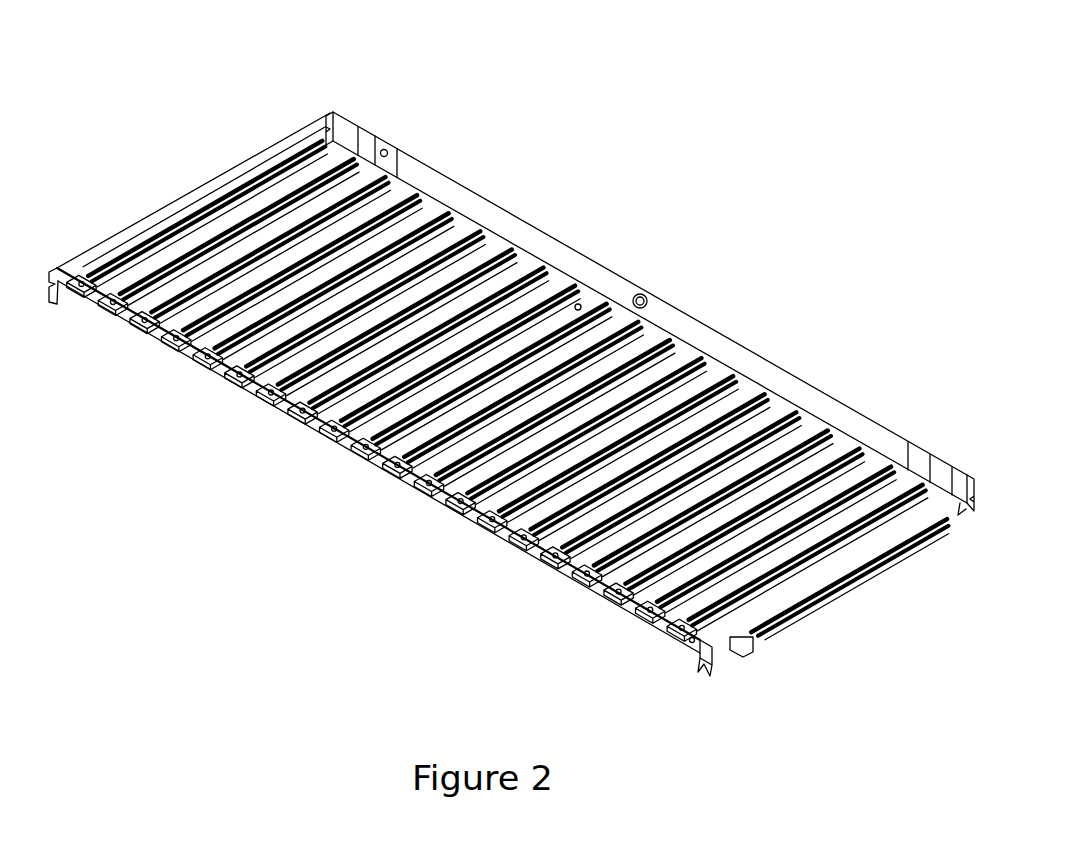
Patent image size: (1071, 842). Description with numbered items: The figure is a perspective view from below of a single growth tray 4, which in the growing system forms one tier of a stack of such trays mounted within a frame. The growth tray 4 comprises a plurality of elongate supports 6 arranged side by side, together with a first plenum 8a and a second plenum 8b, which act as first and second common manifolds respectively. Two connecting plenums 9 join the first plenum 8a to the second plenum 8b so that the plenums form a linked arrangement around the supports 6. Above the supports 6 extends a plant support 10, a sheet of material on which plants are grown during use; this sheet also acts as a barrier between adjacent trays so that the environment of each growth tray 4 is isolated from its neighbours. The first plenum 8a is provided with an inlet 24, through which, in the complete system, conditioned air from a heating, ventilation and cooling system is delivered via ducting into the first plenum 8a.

The growth tray 4 is at (799, 86).
The supports 6 is at (185, 337).
The first plenum 8a is at (775, 360).
The second plenum 8b is at (300, 430).
The connecting plenums 9 is at (157, 233).
The plant support 10 is at (430, 210).
The inlet 24 is at (637, 288).